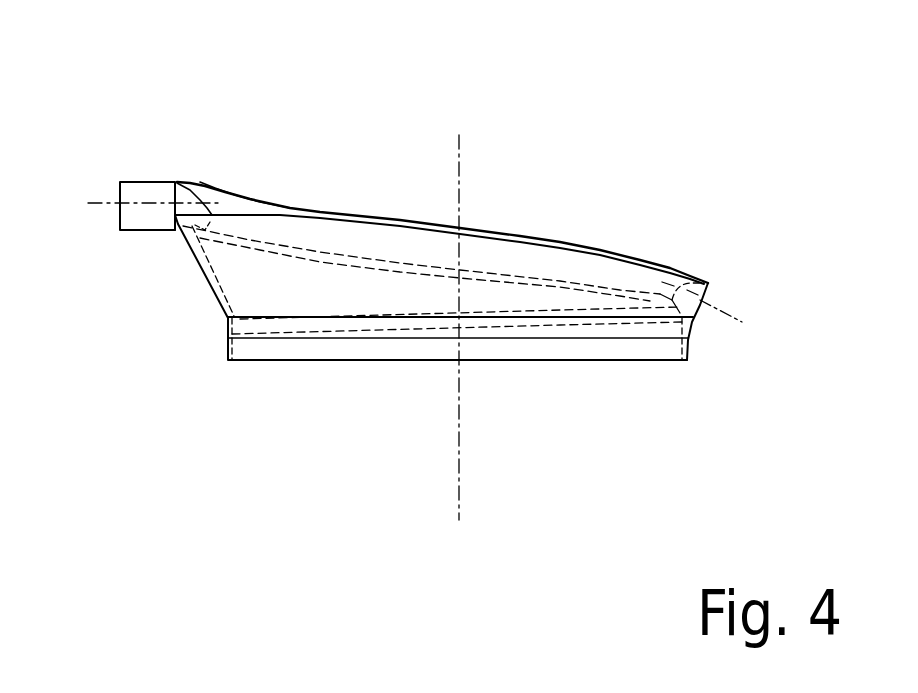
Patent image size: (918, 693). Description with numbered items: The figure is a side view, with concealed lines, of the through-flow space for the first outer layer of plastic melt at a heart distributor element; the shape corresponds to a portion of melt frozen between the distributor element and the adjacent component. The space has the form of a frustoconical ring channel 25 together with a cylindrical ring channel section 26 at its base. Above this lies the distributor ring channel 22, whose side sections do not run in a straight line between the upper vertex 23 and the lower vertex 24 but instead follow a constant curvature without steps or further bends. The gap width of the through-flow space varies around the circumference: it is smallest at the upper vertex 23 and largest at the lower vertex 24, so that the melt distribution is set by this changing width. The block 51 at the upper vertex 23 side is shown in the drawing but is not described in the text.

The hub block 51 is at (147, 118).
The upper vertex 23 is at (232, 118).
The distributor ring channel 22 is at (441, 159).
The lower vertex 24 is at (734, 300).
The frustoconical ring channel 25 is at (130, 266).
The cylindrical ring channel section 26 is at (445, 403).